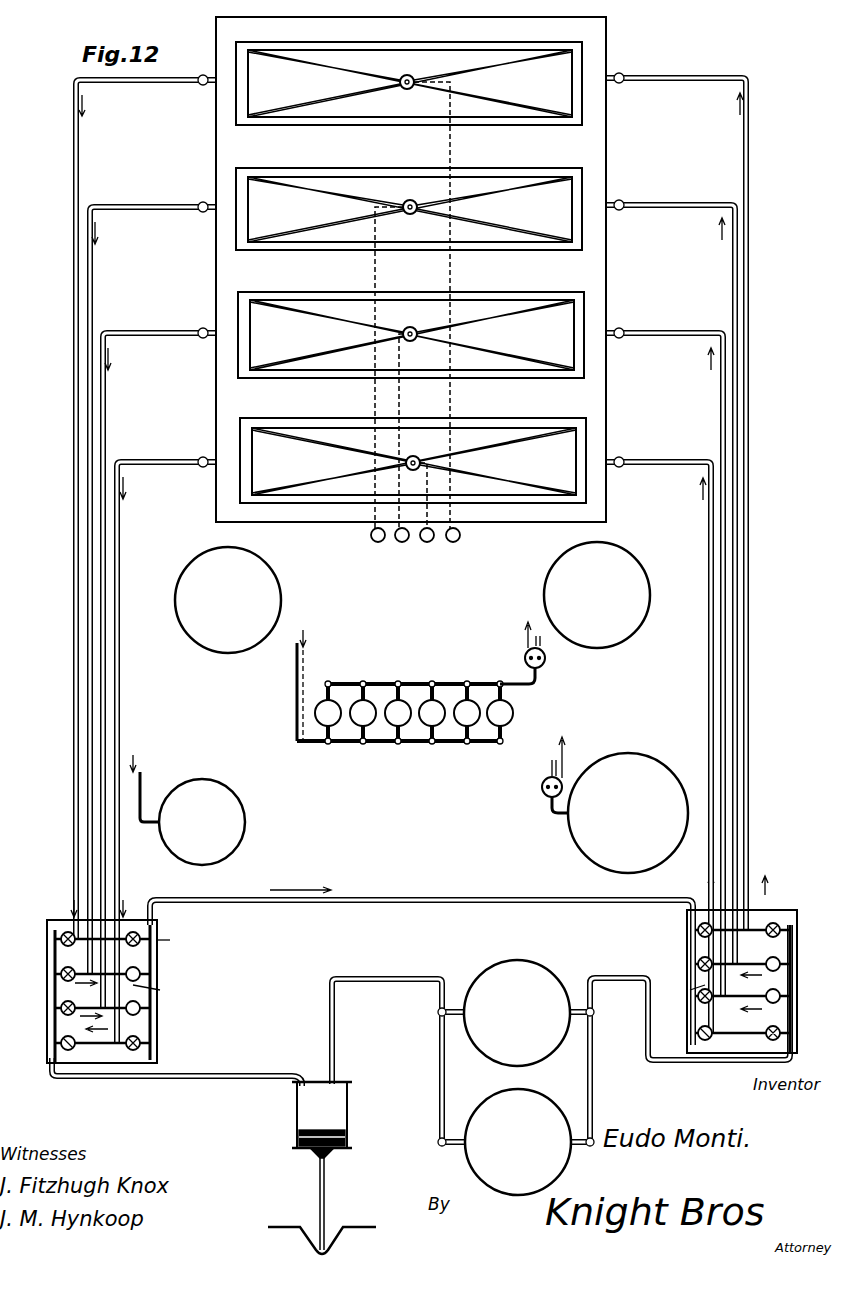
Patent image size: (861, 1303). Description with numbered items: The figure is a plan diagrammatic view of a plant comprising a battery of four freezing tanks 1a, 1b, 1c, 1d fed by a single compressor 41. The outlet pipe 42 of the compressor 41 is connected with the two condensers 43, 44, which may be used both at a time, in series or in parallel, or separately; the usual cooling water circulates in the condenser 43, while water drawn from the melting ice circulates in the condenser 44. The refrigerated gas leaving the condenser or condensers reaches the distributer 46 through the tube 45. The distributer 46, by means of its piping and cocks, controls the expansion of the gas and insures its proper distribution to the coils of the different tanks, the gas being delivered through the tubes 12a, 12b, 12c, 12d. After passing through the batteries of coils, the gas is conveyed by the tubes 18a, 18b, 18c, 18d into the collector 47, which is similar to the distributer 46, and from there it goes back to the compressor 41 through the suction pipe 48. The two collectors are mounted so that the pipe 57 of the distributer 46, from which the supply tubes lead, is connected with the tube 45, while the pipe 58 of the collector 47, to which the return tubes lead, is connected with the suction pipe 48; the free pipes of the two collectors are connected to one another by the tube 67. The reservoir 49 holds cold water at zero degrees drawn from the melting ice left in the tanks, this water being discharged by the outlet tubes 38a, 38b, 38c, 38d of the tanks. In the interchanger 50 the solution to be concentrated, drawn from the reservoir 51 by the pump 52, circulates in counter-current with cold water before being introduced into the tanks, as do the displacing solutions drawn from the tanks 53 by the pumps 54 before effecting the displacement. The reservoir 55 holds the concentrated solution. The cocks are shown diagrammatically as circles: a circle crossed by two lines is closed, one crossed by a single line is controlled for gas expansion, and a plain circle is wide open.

The freezing tank 1a is at (413, 473).
The freezing tank 1b is at (411, 410).
The freezing tank 1c is at (409, 348).
The freezing tank 1d is at (409, 285).
The tube 12a is at (672, 452).
The tube 12b is at (672, 325).
The tube 12c is at (673, 198).
The tube 12d is at (678, 75).
The tube 18a is at (172, 464).
The tube 18b is at (163, 334).
The tube 18c is at (160, 206).
The tube 18d is at (138, 90).
The outlet tube 38a is at (427, 543).
The outlet tube 38b is at (402, 543).
The outlet tube 38c is at (376, 543).
The outlet tube 38d is at (458, 541).
The compressor 41 is at (322, 1098).
The outlet pipe 42 is at (385, 985).
The condenser 43 is at (518, 1142).
The condenser 44 is at (517, 1013).
The tube 45 is at (612, 985).
The distributer 46 is at (690, 990).
The collector 47 is at (167, 992).
The suction pipe 48 is at (216, 1074).
The reservoir 49 is at (228, 600).
The interchanger 50 is at (597, 595).
The reservoir 51 is at (628, 813).
The pump 52 is at (542, 792).
The tanks 53 is at (405, 725).
The pumps 54 is at (524, 660).
The reservoir 55 is at (187, 810).
The pipe 57 is at (812, 940).
The pipe 58 is at (47, 945).
The tube 67 is at (421, 957).